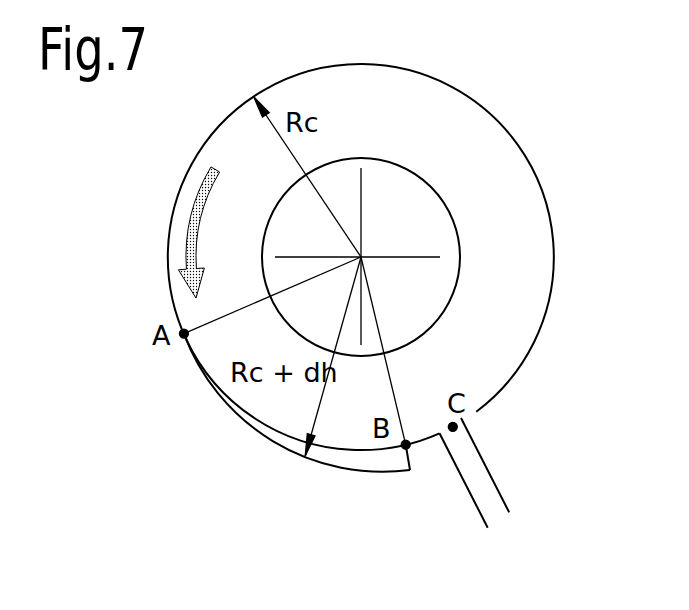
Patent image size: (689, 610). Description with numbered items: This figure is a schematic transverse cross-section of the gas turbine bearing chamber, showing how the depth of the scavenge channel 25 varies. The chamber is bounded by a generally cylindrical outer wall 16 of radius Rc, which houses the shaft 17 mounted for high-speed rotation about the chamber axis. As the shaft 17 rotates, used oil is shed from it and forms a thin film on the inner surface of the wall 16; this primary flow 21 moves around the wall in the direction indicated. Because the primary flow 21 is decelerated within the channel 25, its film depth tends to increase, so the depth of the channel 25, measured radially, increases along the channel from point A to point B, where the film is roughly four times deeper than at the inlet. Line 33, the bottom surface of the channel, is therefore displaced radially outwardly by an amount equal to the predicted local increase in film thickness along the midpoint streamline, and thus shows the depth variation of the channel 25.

The outer wall 16 is at (543, 178).
The shaft 17 is at (402, 183).
The primary flow 21 is at (183, 232).
The scavenge channel 25 is at (258, 433).
The bottom surface 33 is at (322, 465).